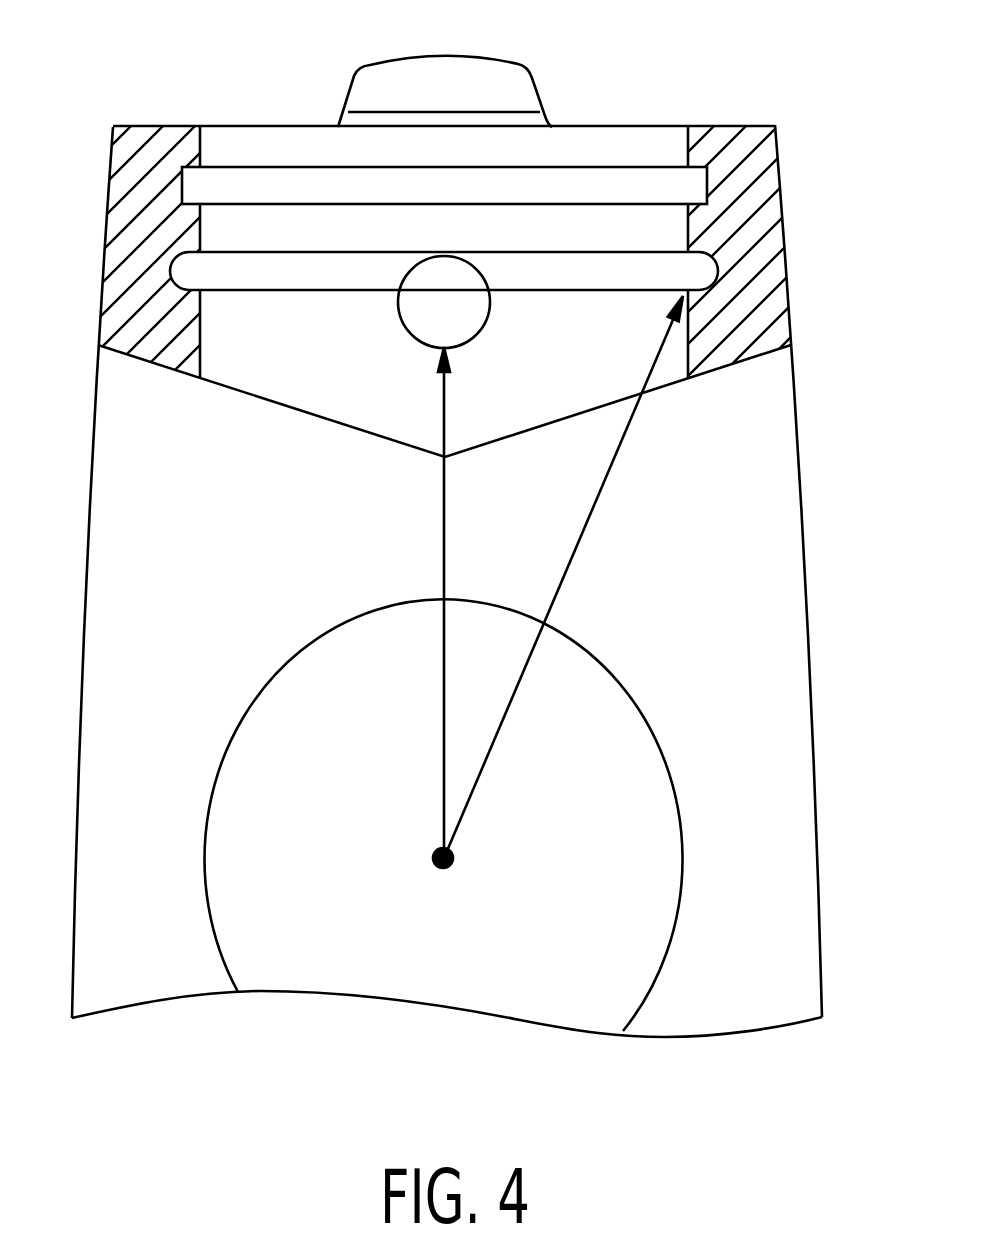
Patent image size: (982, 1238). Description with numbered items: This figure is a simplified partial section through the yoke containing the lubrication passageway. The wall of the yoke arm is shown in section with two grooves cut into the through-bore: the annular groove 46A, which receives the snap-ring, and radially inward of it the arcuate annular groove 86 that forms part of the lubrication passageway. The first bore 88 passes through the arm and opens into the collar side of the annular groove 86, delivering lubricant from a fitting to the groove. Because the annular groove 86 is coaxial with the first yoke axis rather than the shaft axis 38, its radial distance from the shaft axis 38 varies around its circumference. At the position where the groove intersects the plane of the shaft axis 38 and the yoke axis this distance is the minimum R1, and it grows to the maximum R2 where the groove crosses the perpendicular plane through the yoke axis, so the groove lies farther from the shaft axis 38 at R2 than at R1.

The annular groove 46A is at (611, 167).
The annular groove 86 is at (533, 289).
The first bore 88 is at (418, 338).
The shaft axis 38 is at (443, 868).
The minimum radial distance R1 is at (444, 523).
The maximum radial distance R2 is at (573, 555).